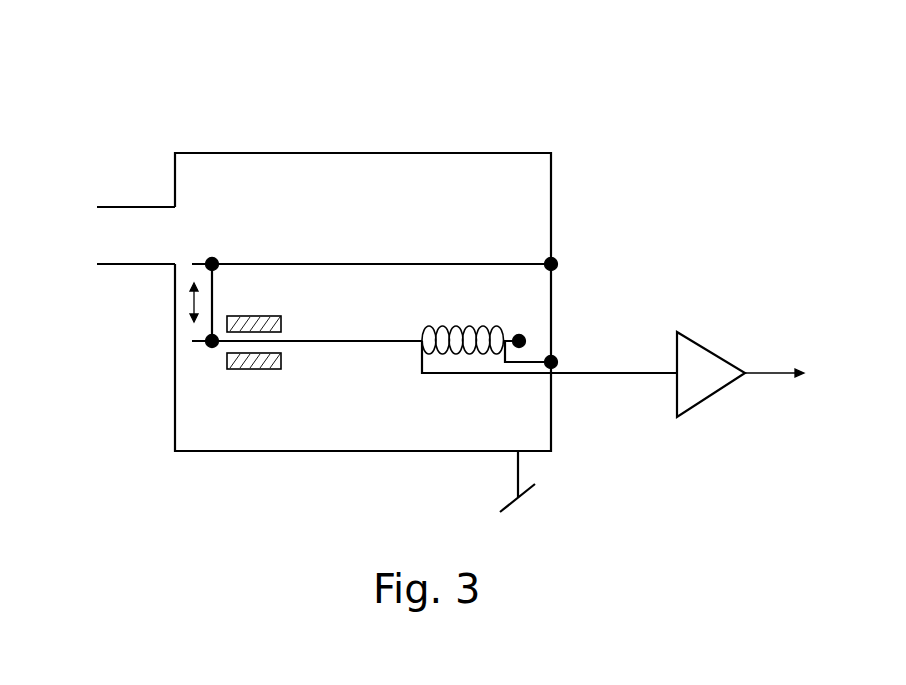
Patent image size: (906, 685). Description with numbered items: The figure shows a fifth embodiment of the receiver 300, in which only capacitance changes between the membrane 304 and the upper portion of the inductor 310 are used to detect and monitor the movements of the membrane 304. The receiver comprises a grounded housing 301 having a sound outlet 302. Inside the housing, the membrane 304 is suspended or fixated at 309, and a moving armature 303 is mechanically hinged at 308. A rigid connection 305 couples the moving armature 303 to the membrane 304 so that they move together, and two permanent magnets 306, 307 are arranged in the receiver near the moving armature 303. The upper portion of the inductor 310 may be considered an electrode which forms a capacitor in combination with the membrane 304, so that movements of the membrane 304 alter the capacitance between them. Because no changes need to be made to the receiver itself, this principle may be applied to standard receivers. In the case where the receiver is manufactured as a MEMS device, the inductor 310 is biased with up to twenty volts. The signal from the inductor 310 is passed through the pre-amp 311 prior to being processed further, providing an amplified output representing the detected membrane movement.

The measurement system 300 is at (192, 66).
The grounded housing 301 is at (553, 203).
The sound outlet 302 is at (108, 231).
The moving armature 303 is at (402, 344).
The membrane 304 is at (383, 262).
The rigid connection 305 is at (208, 336).
The permanent magnet 306 is at (281, 360).
The permanent magnet 307 is at (281, 323).
The hinge point of moving armature 308 is at (525, 343).
The suspension point of membrane 309 is at (557, 262).
The inductor 310 is at (455, 326).
The pre-amp 311 is at (706, 382).